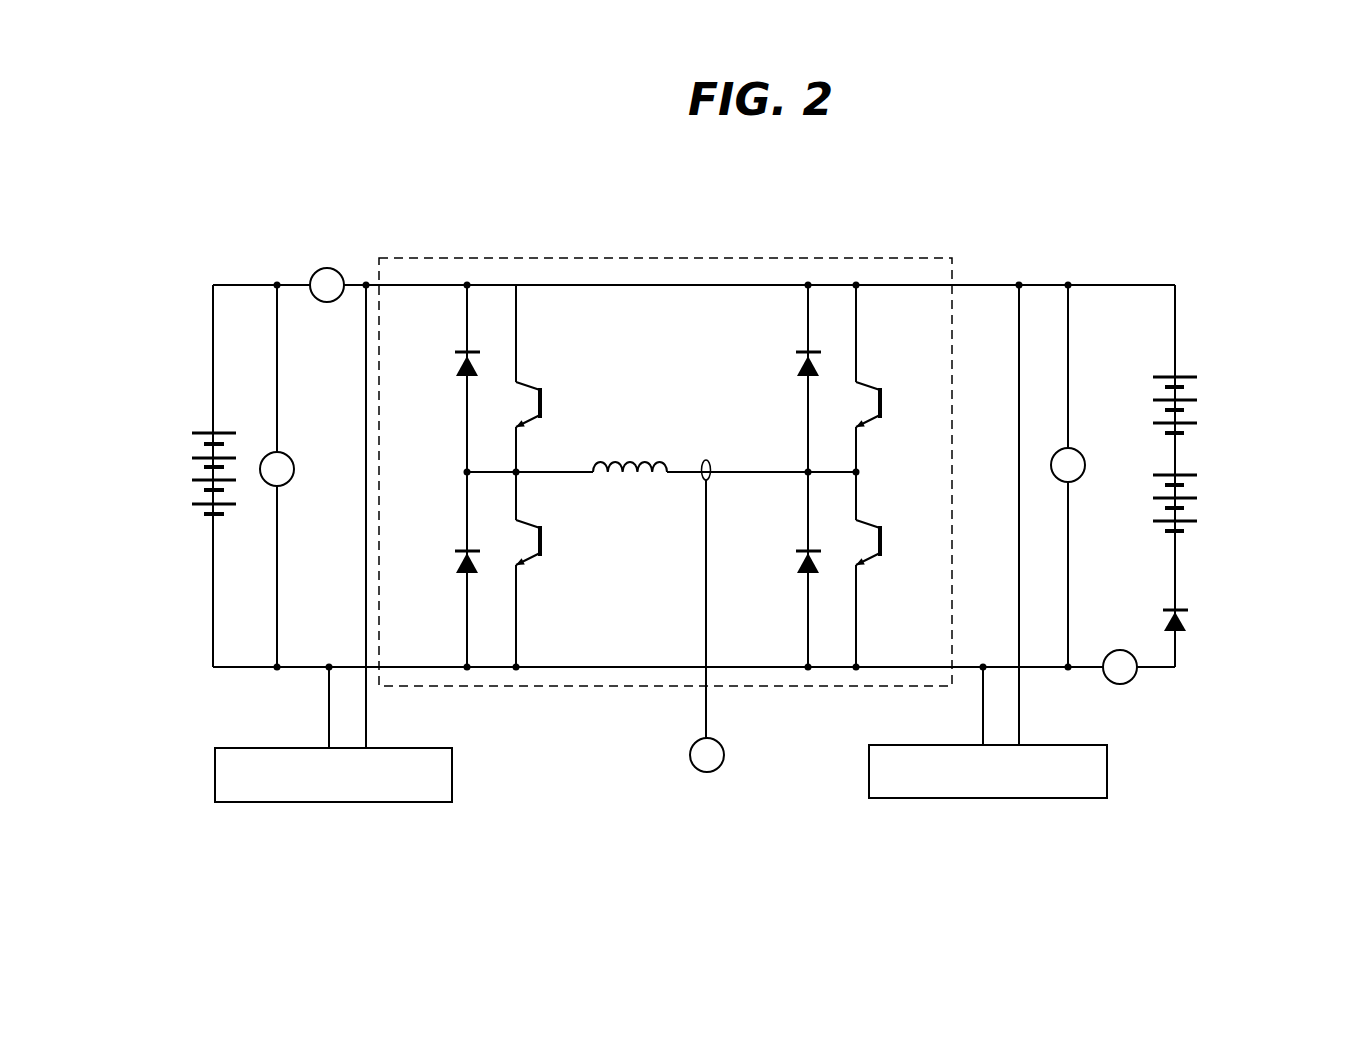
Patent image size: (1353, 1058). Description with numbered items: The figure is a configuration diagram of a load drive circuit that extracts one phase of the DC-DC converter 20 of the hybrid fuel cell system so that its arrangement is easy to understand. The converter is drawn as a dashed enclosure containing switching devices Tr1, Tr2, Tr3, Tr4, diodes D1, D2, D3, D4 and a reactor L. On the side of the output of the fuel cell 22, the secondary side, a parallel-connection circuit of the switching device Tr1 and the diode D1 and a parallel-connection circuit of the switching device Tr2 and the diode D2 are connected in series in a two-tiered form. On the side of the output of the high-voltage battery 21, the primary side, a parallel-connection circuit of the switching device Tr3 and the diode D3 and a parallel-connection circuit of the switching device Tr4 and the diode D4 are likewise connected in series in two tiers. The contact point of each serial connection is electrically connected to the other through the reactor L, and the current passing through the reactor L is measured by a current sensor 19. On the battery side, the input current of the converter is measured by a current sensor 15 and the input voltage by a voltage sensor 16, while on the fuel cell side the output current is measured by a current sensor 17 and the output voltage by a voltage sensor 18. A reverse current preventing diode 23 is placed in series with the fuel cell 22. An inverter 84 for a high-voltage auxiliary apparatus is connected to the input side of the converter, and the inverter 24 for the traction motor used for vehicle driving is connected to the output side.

The current sensor 15 is at (332, 268).
The voltage sensor 16 is at (289, 457).
The current sensor 17 is at (1122, 649).
The voltage sensor 18 is at (1082, 452).
The current sensor 19 is at (711, 773).
The DC-DC converter 20 is at (594, 258).
The high-voltage battery 21 is at (192, 466).
The fuel cell 22 is at (1195, 452).
The reverse current preventing diode 23 is at (1185, 626).
The inverter 24 is at (1107, 772).
The inverter for high-voltage auxiliary apparatus 84 is at (452, 775).
The diode D1 is at (800, 369).
The diode D2 is at (801, 563).
The diode D3 is at (460, 369).
The diode D4 is at (462, 563).
The switching device Tr1 is at (887, 388).
The switching device Tr2 is at (888, 526).
The switching device Tr3 is at (549, 384).
The switching device Tr4 is at (537, 573).
The reactor L is at (632, 485).